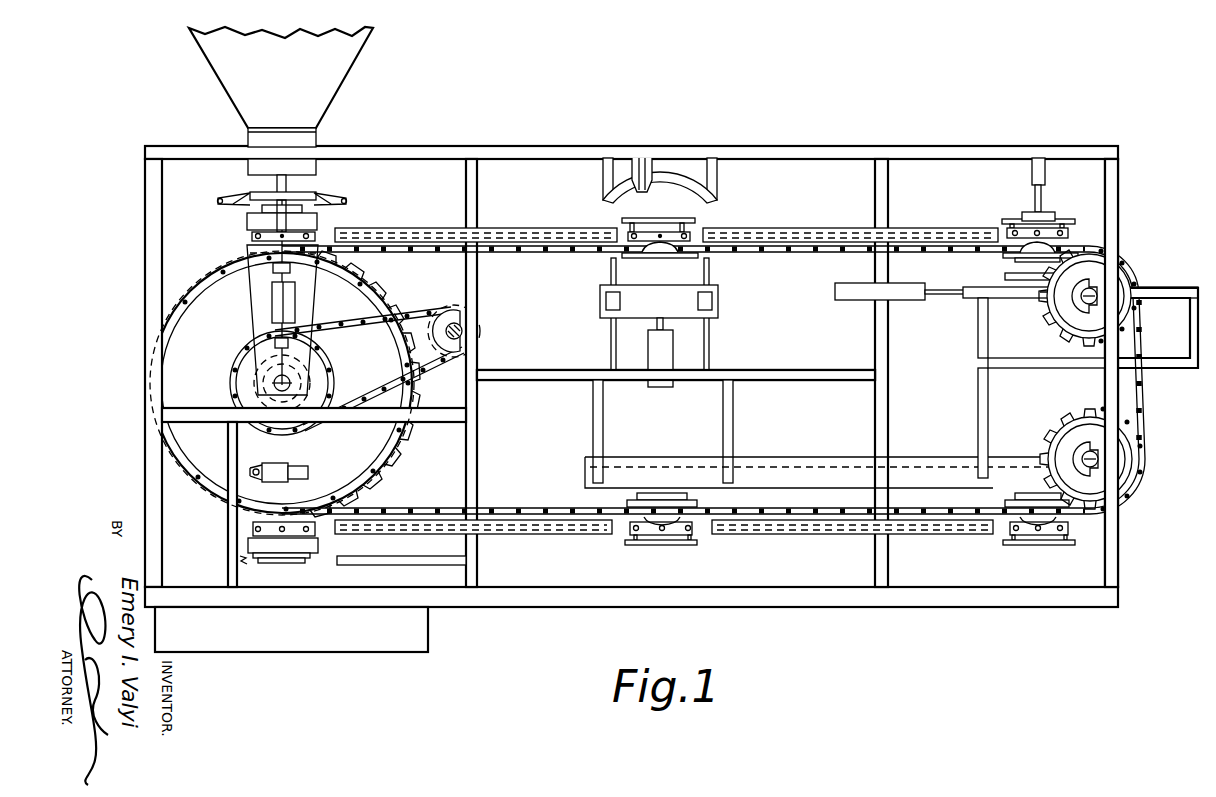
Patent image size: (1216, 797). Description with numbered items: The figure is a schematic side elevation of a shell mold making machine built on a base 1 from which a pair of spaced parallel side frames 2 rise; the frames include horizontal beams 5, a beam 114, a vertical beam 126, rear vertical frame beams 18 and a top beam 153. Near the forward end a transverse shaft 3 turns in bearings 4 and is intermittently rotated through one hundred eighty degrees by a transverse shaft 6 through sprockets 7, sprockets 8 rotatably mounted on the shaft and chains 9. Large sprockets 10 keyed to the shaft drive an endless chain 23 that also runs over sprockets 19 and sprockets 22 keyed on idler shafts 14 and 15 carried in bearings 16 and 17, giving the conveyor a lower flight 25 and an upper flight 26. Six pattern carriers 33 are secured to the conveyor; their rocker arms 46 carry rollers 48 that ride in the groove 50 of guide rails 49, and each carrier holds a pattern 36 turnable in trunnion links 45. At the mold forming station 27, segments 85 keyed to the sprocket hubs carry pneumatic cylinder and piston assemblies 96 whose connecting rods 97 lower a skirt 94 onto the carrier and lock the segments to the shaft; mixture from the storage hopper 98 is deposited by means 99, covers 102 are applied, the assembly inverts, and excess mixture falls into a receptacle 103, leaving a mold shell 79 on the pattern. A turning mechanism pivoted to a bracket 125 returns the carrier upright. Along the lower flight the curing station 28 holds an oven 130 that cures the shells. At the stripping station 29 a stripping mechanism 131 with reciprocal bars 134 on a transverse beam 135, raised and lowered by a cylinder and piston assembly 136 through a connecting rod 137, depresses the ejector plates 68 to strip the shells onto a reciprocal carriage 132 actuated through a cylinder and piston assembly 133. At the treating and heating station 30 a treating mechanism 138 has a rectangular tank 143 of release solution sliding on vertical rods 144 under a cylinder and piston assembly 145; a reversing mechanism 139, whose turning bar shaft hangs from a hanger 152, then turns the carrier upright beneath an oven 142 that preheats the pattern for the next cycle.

The base 1 is at (650, 601).
The side frames 2 is at (535, 156).
The transverse shaft 3 is at (300, 383).
The bearings 4 is at (260, 383).
The horizontal beams 5 is at (210, 414).
The transverse shaft 6 is at (470, 331).
The sprockets 7 is at (396, 354).
The sprockets 8 is at (316, 361).
The chains 9 is at (414, 316).
The large sprockets 10 is at (385, 414).
The idler shaft 14 is at (1082, 452).
The idler shaft 15 is at (1081, 305).
The bearings 16 is at (1103, 470).
The bearings 17 is at (1100, 301).
The vertical frame beams 18 is at (1108, 383).
The sprockets 19 is at (1048, 433).
The sprockets 22 is at (1060, 312).
The endless chain 23 is at (555, 252).
The lower flight 25 is at (548, 553).
The upper flight 26 is at (555, 213).
The mold forming station 27 is at (186, 275).
The curing station 28 is at (812, 468).
The stripping station 29 is at (1078, 234).
The treating and heating station 30 is at (713, 226).
The pattern carriers 33 is at (245, 222).
The pattern 36 is at (700, 314).
The trunnion links 45 is at (633, 527).
The rocker arms 46 is at (252, 236).
The rollers 48 is at (248, 280).
The guide rails 49 is at (495, 232).
The groove 50 is at (832, 537).
The ejector plates 68 is at (622, 218).
The mold shell 79 is at (302, 565).
The segments 85 is at (259, 315).
The skirt 94 is at (311, 220).
The pneumatic cylinder and piston assemblies 96 is at (296, 300).
The connecting rods 97 is at (272, 356).
The storage hopper 98 is at (342, 62).
The means 99 is at (306, 160).
The covers 102 is at (240, 197).
The receptacle 103 is at (430, 630).
The beam 114 is at (238, 560).
The bracket 125 is at (255, 471).
The vertical beam 126 is at (218, 521).
The oven 130 is at (927, 465).
The stripping mechanism 131 is at (1034, 200).
The reciprocal carriage 132 is at (982, 312).
The cylinder and piston assembly 133 is at (913, 283).
The reciprocal bars 134 is at (1022, 215).
The transverse beam 135 is at (1045, 210).
The cylinder and piston assembly 136 is at (1040, 160).
The connecting rod 137 is at (1045, 192).
The treating mechanism 138 is at (722, 311).
The reversing mechanism 139 is at (637, 160).
The oven 142 is at (718, 184).
The rectangular tank 143 is at (640, 317).
The vertical rods 144 is at (711, 343).
The cylinder and piston assembly 145 is at (663, 388).
The hanger 152 is at (668, 182).
The top beam 153 is at (748, 150).